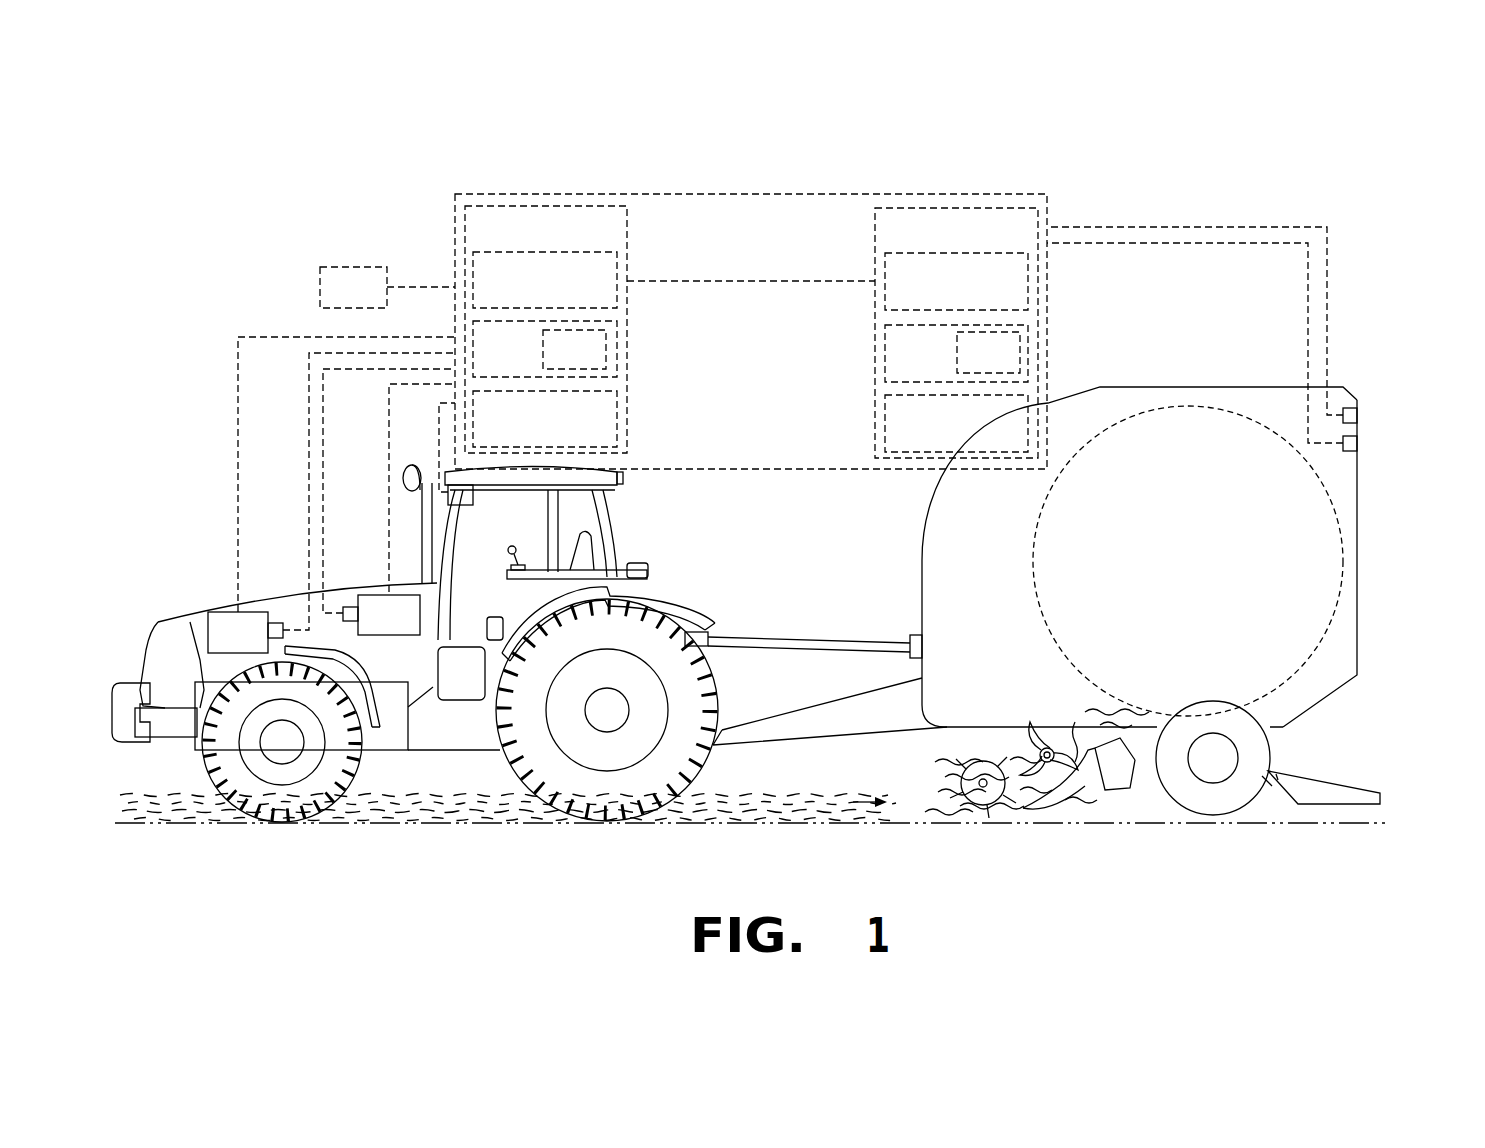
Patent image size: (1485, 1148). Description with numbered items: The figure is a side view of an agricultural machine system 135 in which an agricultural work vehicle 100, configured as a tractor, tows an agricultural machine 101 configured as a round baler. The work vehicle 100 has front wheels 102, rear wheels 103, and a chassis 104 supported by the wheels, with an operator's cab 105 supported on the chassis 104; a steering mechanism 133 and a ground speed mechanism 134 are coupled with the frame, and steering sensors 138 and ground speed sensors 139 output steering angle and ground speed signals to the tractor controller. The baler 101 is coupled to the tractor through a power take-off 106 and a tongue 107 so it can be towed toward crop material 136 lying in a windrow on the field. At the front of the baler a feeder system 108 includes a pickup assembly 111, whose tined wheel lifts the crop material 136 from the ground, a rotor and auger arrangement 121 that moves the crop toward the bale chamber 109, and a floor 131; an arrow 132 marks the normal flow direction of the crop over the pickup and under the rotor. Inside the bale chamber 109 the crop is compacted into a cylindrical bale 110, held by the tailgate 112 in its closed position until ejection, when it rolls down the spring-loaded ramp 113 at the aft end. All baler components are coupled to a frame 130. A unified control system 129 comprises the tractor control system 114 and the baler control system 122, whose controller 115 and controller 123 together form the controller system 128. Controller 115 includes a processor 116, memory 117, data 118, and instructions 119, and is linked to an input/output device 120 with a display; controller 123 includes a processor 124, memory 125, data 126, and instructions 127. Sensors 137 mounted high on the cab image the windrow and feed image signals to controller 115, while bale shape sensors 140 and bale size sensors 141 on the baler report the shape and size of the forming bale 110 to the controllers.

The agricultural work vehicle 100 is at (216, 550).
The agricultural machine 101 is at (1105, 368).
The front wheels 102 is at (207, 758).
The rear wheels 103 is at (705, 760).
The chassis 104 is at (433, 745).
The operator's cab 105 is at (499, 497).
The power take-off 106 is at (763, 633).
The tongue 107 is at (795, 707).
The feeder system 108 is at (920, 772).
The bale chamber 109 is at (1235, 395).
The bale 110 is at (1335, 506).
The pickup assembly 111 is at (978, 797).
The tailgate 112 is at (1352, 387).
The ramp 113 is at (1354, 782).
The control system 114 is at (662, 172).
The controller 115 is at (556, 240).
The processor 116 is at (529, 297).
The memory 117 is at (529, 365).
The data 118 is at (593, 365).
The instructions 119 is at (529, 433).
The input/output device 120 is at (374, 302).
The rotor and auger arrangement 121 is at (1085, 783).
The control system 122 is at (850, 170).
The controller 123 is at (966, 243).
The processor 124 is at (943, 298).
The memory 125 is at (936, 368).
The data 126 is at (1006, 368).
The instructions 127 is at (943, 438).
The controller system 128 is at (768, 240).
The control system 129 is at (832, 108).
The frame 130 is at (1118, 723).
The floor 131 is at (1055, 785).
The normal flow direction 132 is at (866, 805).
The steering mechanism 133 is at (257, 647).
The ground speed mechanism 134 is at (410, 629).
The agricultural machine system 135 is at (281, 187).
The crop material 136 is at (408, 813).
The sensors 137 is at (448, 497).
The steering sensors 138 is at (282, 620).
The ground speed sensors 139 is at (348, 605).
The bale shape sensors 140 is at (1360, 415).
The bale size sensors 141 is at (1360, 445).